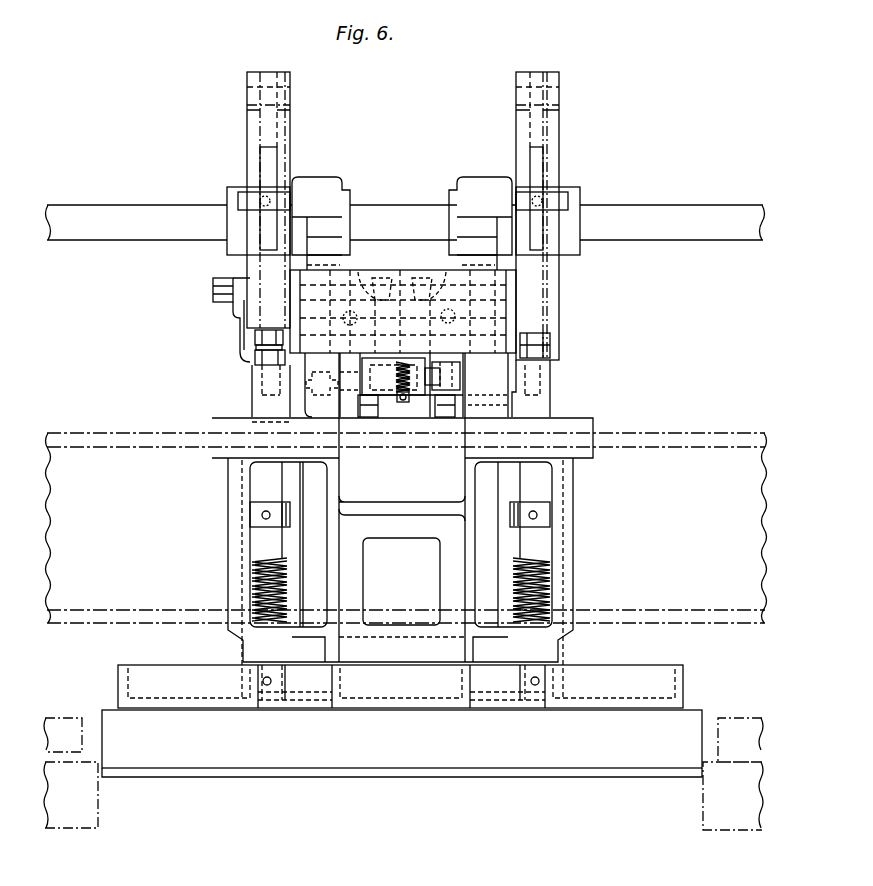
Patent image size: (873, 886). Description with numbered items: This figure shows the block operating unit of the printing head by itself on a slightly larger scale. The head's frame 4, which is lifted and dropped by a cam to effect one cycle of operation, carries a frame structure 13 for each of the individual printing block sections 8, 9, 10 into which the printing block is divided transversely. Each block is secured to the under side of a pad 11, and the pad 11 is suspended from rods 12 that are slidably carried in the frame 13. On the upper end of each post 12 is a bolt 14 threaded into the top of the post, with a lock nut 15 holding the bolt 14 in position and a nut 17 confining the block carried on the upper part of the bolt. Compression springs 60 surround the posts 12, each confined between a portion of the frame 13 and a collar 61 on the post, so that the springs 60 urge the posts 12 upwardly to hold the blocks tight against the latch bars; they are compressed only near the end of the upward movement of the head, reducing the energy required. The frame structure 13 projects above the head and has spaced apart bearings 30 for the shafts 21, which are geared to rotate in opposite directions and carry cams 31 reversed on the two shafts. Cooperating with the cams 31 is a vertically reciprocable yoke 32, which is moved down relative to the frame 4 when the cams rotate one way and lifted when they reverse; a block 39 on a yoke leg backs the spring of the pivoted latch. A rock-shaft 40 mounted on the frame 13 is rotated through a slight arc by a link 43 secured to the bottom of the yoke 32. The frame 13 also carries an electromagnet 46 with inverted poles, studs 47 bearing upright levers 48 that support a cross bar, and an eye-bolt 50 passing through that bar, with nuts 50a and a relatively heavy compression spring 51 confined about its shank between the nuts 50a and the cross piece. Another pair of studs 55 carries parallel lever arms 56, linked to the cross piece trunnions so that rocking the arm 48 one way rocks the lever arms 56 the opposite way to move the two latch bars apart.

The frame 4 is at (406, 516).
The printing block section 8 is at (415, 758).
The printing block section 9 is at (82, 820).
The printing block section 10 is at (748, 820).
The pad 11 is at (676, 684).
The rod 12 is at (262, 487).
The frame 13 is at (225, 467).
The bolt 14 is at (262, 348).
The lock nut 15 is at (260, 360).
The nut 17 is at (256, 336).
The shaft 21 is at (648, 214).
The bearing 30 is at (322, 228).
The cam 31 is at (268, 161).
The yoke 32 is at (252, 73).
The block 39 is at (240, 198).
The rock-shaft 40 is at (505, 403).
The link 43 is at (240, 318).
The electromagnet 46 is at (403, 299).
The stud 47 is at (372, 421).
The lever 48 is at (362, 412).
The eye-bolt 50 is at (402, 400).
The nuts 50a is at (408, 402).
The compression spring 51 is at (405, 376).
The stud 55 is at (463, 372).
The lever arm 56 is at (452, 380).
The compression spring 60 is at (252, 572).
The collar 61 is at (258, 516).